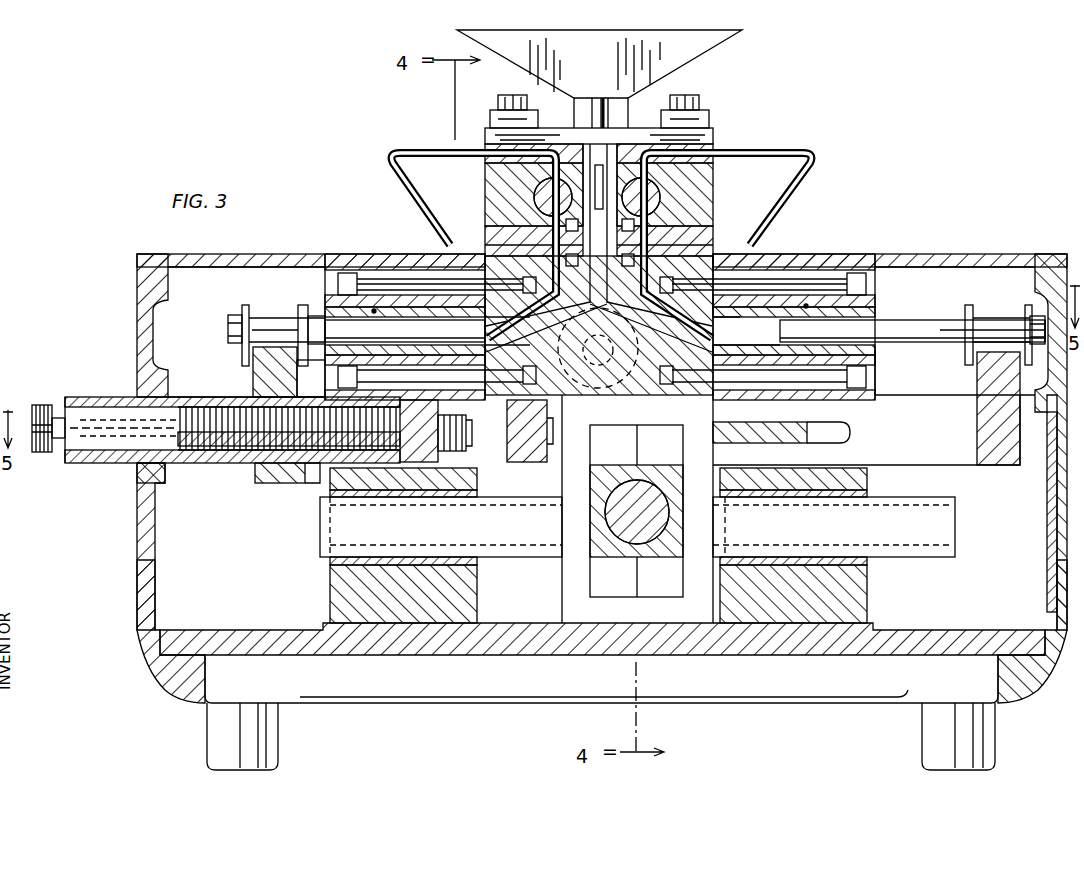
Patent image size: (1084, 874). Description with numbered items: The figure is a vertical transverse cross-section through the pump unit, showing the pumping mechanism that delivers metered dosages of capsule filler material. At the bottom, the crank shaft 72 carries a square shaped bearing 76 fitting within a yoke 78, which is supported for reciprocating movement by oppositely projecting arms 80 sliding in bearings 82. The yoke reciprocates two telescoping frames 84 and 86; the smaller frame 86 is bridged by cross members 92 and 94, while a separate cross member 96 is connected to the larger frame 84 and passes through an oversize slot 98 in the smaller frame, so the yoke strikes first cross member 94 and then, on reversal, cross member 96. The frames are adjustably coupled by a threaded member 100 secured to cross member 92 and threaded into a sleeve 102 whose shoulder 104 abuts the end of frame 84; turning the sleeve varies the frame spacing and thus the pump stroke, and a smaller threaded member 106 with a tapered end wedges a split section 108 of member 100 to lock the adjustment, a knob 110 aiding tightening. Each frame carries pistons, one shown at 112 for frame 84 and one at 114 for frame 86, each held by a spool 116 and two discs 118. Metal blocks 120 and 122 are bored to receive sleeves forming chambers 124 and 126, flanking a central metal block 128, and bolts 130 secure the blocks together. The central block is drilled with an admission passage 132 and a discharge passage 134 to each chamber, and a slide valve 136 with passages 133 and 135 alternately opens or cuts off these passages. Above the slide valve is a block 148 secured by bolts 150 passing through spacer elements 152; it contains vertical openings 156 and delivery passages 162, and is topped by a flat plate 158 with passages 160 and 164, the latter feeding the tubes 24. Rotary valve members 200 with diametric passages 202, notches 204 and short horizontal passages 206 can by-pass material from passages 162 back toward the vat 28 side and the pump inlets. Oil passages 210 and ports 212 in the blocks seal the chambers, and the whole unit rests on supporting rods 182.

The tubes 24 is at (814, 173).
The vat 28 is at (698, 46).
The crank shaft 72 is at (632, 549).
The square shaped bearing 76 is at (672, 553).
The yoke 78 is at (562, 597).
The oppositely projecting arms 80 is at (322, 547).
The bearings 82 is at (332, 602).
The frame 84 is at (258, 477).
The frame 86 is at (1020, 471).
The cross member 92 is at (474, 413).
The cross member 94 is at (508, 441).
The cross member 96 is at (770, 422).
The slot 98 is at (850, 435).
The threaded member 100 is at (240, 390).
The sleeve 102 is at (228, 397).
The shoulder 104 is at (296, 485).
The smaller threaded member 106 is at (90, 470).
The split section 108 is at (208, 465).
The knob 110 is at (42, 405).
The piston 112 is at (318, 315).
The piston 114 is at (908, 309).
The spool 116 is at (265, 318).
The discs 118 is at (242, 311).
The metal block 120 is at (352, 262).
The metal block 122 is at (810, 265).
The chamber 124 is at (445, 384).
The chamber 126 is at (760, 374).
The central metal block 128 is at (590, 398).
The bolts 130 is at (422, 276).
The admission passage 132 is at (487, 347).
The valve passages 133 is at (599, 280).
The discharge passage 134 is at (602, 285).
The valve passages 135 is at (500, 253).
The slide valve 136 is at (692, 237).
The metal block 148 is at (700, 184).
The bolts 150 is at (504, 103).
The spacer elements 152 is at (488, 240).
The vertical openings 156 is at (612, 140).
The flat plate 158 is at (713, 139).
The passages 160 is at (584, 140).
The passages 162 is at (530, 214).
The passages 164 is at (506, 178).
The supporting rods 182 is at (278, 742).
The rotary valve member 200 is at (662, 213).
The diametric passages 202 is at (662, 197).
The notches 204 is at (624, 200).
The short horizontal passage 206 is at (606, 187).
The passage 210 is at (374, 310).
The ports 212 is at (376, 316).